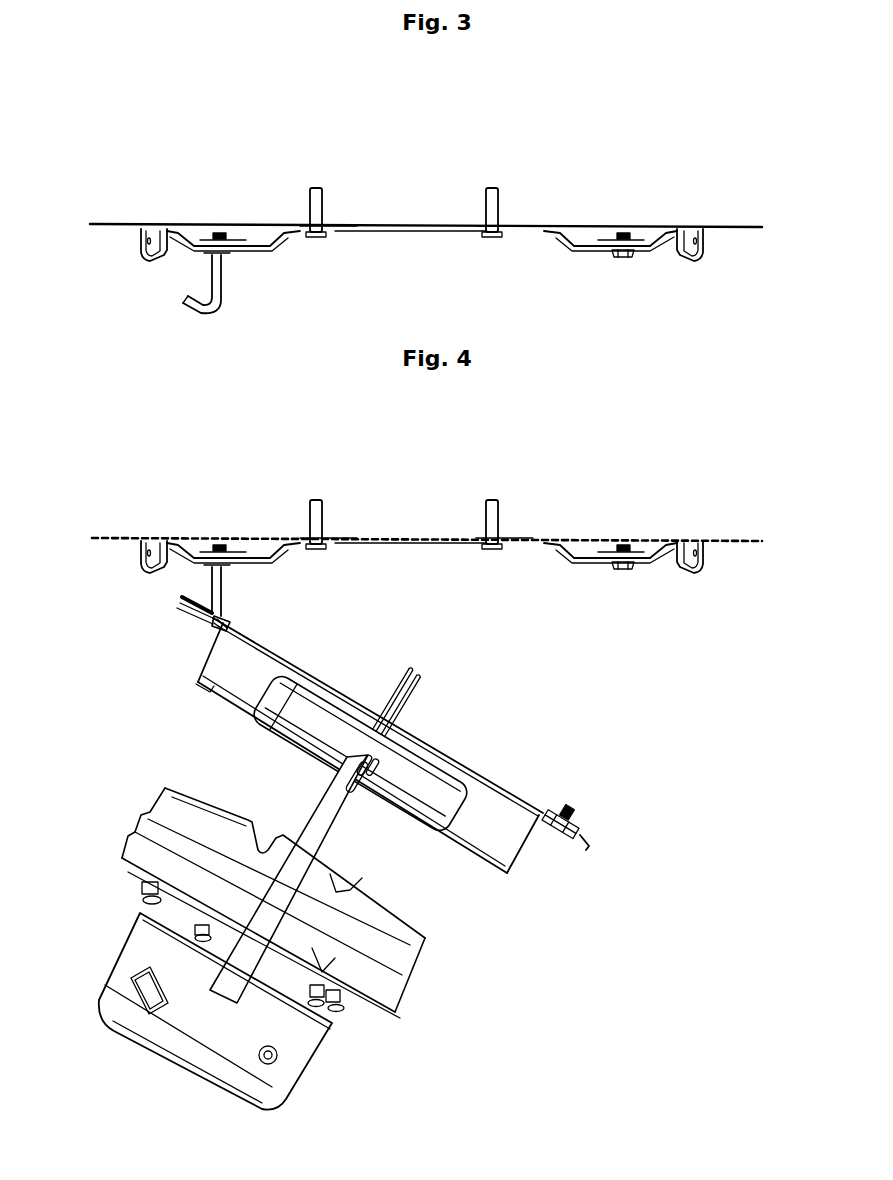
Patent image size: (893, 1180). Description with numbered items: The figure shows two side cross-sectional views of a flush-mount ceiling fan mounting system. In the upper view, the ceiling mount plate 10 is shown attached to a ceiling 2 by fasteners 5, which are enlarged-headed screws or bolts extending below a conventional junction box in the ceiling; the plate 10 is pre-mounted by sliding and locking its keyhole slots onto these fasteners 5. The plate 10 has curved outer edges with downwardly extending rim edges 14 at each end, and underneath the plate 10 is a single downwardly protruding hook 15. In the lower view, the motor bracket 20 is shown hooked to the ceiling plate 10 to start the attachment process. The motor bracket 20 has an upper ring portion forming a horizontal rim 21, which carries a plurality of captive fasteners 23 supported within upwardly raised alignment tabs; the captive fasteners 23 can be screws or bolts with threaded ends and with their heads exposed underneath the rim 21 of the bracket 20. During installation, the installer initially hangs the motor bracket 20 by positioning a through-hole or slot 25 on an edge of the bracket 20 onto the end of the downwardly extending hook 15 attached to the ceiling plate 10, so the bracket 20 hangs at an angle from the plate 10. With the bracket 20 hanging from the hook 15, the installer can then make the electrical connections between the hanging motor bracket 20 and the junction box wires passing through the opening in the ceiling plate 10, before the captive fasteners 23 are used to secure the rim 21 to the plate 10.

In FIG. 3, the ceiling 2 is at (107, 232).
In FIG. 4, the ceiling 2 is at (110, 545).
In FIG. 3, the fasteners 5 is at (494, 201).
In FIG. 4, the fasteners 5 is at (489, 520).
In FIG. 3, the ceiling mount plate 10 is at (162, 320).
In FIG. 4, the ceiling mount plate 10 is at (657, 519).
In FIG. 3, the rim edges 14 is at (683, 258).
In FIG. 4, the rim edges 14 is at (422, 557).
In FIG. 3, the hook 15 is at (208, 308).
In FIG. 4, the hook 15 is at (224, 603).
In FIG. 4, the motor bracket 20 is at (390, 860).
In FIG. 4, the horizontal rim 21 is at (590, 842).
In FIG. 4, the captive fasteners 23 is at (566, 820).
In FIG. 4, the through-hole (slot) 25 is at (221, 624).